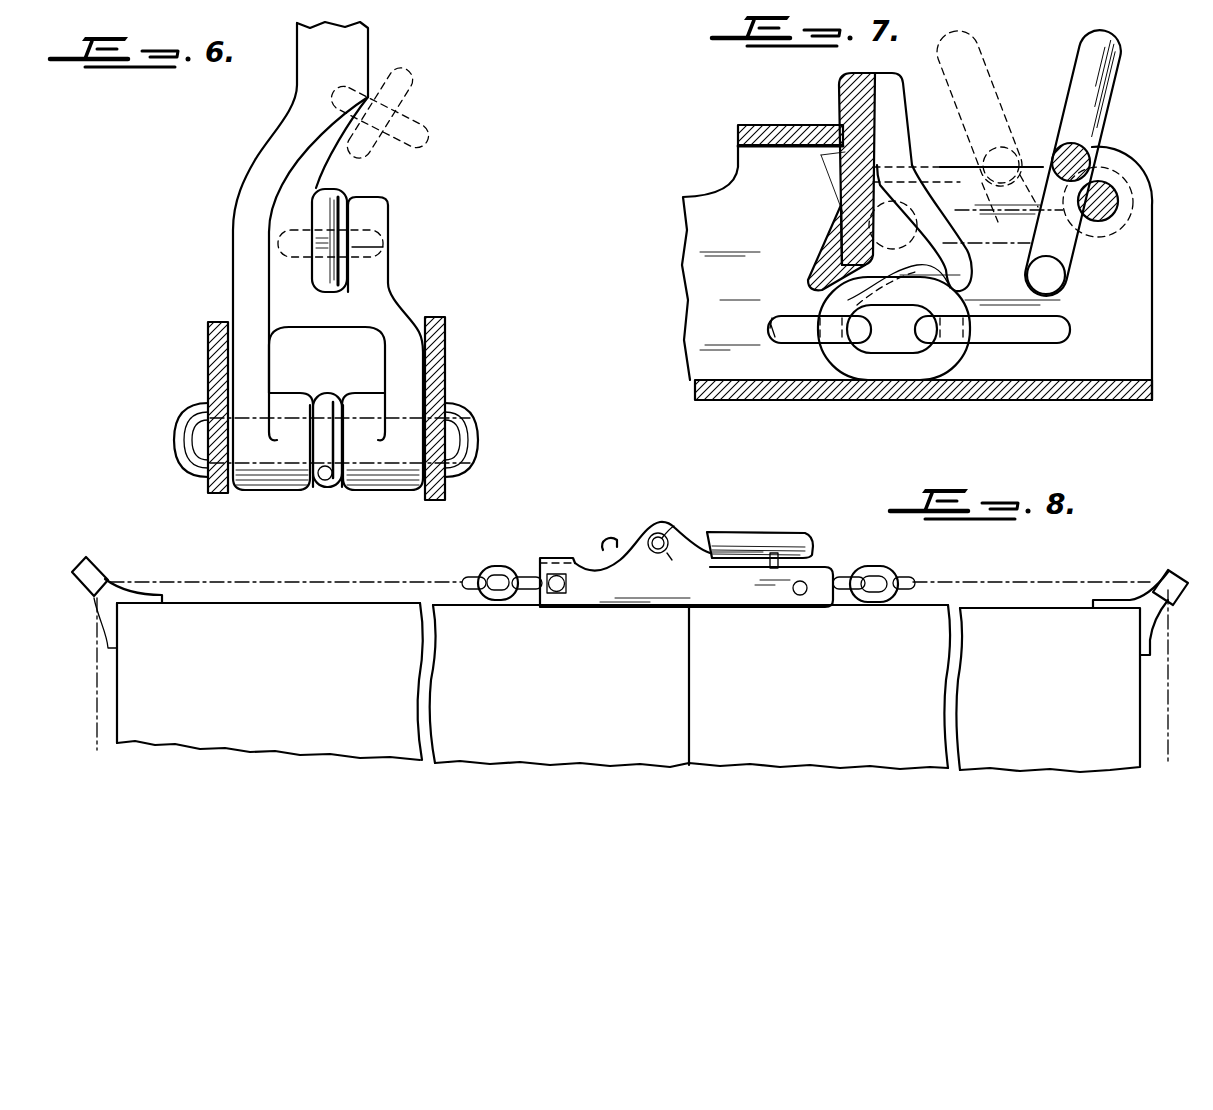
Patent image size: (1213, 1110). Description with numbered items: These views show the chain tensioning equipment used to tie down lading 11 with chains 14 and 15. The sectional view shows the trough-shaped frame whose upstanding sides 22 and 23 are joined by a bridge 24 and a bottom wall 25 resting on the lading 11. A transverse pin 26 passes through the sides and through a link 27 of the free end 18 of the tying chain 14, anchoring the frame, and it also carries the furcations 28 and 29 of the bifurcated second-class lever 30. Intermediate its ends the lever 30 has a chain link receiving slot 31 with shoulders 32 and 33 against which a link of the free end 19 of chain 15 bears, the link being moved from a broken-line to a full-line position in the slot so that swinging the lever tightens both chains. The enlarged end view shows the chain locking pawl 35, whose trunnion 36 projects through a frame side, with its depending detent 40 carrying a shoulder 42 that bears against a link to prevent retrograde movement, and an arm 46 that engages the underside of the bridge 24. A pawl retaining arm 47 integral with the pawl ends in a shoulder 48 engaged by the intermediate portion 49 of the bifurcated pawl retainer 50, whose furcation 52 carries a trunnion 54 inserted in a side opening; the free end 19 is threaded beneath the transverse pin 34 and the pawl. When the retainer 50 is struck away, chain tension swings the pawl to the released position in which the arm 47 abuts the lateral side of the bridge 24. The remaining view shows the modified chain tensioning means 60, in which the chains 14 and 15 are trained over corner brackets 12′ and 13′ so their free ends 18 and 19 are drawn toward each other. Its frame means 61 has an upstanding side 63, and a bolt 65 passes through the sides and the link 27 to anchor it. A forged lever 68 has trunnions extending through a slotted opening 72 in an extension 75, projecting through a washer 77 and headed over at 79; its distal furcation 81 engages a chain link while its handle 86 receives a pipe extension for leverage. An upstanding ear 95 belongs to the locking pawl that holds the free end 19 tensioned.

In FIG. 8, the lading 11 is at (603, 758).
In FIG. 8, the corner bracket 12′ is at (97, 575).
In FIG. 8, the corner bracket 13′ is at (1165, 578).
In FIG. 8, the tying chain 14 is at (316, 582).
In FIG. 8, the chain 15 is at (1053, 583).
In FIG. 8, the free end 18 is at (482, 574).
In FIG. 6, the free end 19 is at (413, 103).
In FIG. 7, the free end 19 is at (765, 325).
In FIG. 8, the free end 19 is at (910, 577).
In FIG. 6, the upstanding side 22 is at (207, 372).
In FIG. 7, the upstanding side 22 is at (1140, 273).
In FIG. 6, the upstanding side 23 is at (447, 358).
In FIG. 7, the bridge 24 is at (790, 125).
In FIG. 7, the bottom wall 25 is at (1080, 388).
In FIG. 6, the transverse pin 26 is at (400, 462).
In FIG. 6, the link 27 is at (327, 485).
In FIG. 8, the link 27 is at (540, 574).
In FIG. 6, the furcation 28 is at (263, 480).
In FIG. 6, the furcation 29 is at (370, 482).
In FIG. 6, the bifurcated second-class lever 30 is at (230, 160).
In FIG. 6, the chain link receiving slot 31 is at (350, 197).
In FIG. 6, the shoulder 32 is at (280, 240).
In FIG. 6, the shoulder 33 is at (385, 247).
In FIG. 7, the transverse pin 34 is at (1120, 196).
In FIG. 7, the chain locking pawl 35 is at (805, 229).
In FIG. 7, the trunnion 36 is at (840, 218).
In FIG. 7, the detent 40 is at (965, 272).
In FIG. 7, the shoulder 42 is at (920, 265).
In FIG. 7, the arm 46 is at (820, 270).
In FIG. 7, the pawl retaining arm 47 is at (876, 118).
In FIG. 7, the shoulder 48 is at (842, 98).
In FIG. 7, the intermediate portion 49 is at (1094, 143).
In FIG. 7, the bifurcated pawl retainer 50 is at (1003, 95).
In FIG. 7, the furcation 52 is at (1088, 234).
In FIG. 7, the trunnion 54 is at (1062, 280).
In FIG. 8, the chain tensioning means 60 is at (586, 541).
In FIG. 8, the frame means 61 is at (862, 568).
In FIG. 8, the upstanding side 63 is at (750, 597).
In FIG. 8, the bolt 65 is at (567, 585).
In FIG. 8, the lever 68 is at (727, 527).
In FIG. 8, the slotted opening 72 is at (658, 533).
In FIG. 8, the extension 75 is at (672, 530).
In FIG. 8, the washer 77 is at (653, 553).
In FIG. 8, the headed-over end 79 is at (670, 556).
In FIG. 8, the furcation 81 is at (613, 546).
In FIG. 8, the handle 86 is at (785, 542).
In FIG. 8, the ear 95 is at (790, 556).